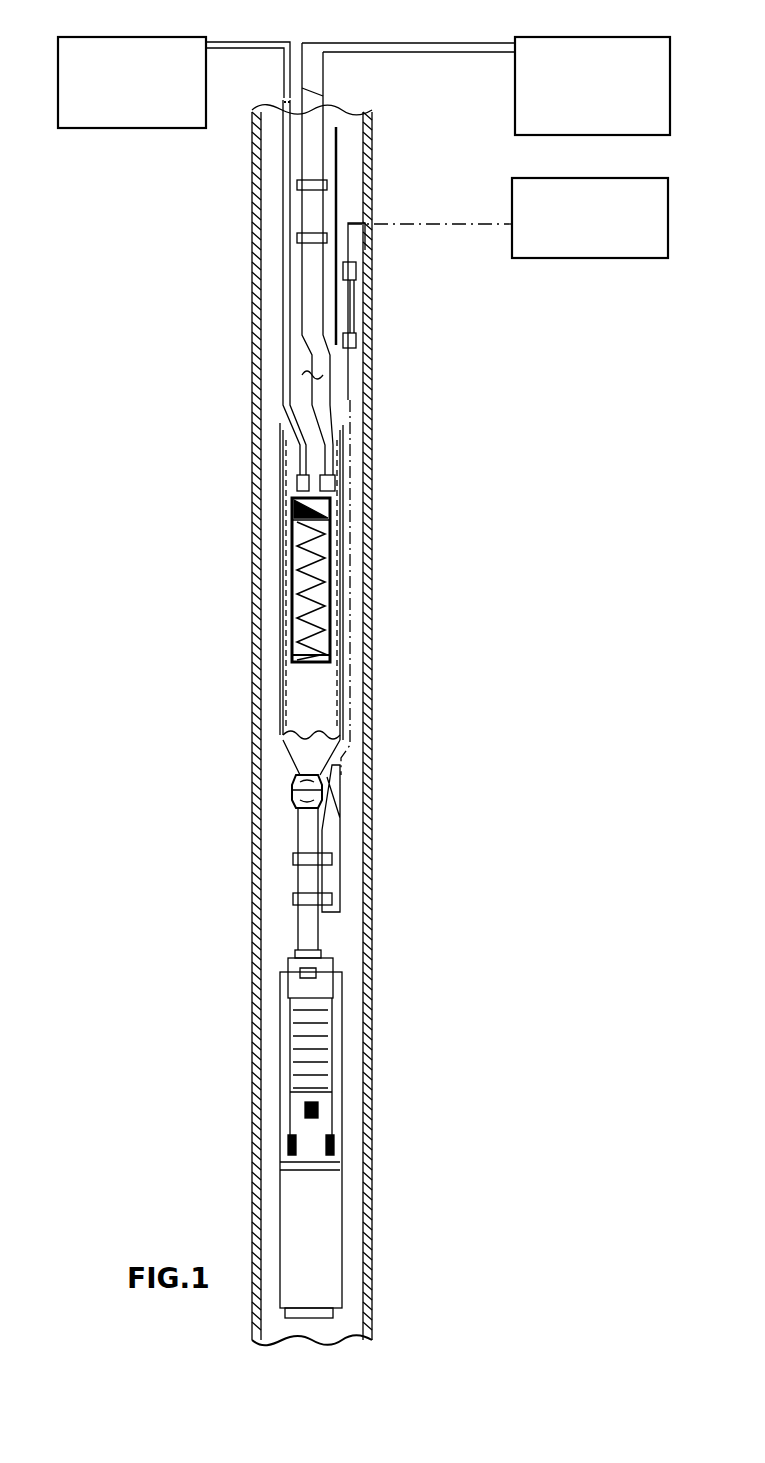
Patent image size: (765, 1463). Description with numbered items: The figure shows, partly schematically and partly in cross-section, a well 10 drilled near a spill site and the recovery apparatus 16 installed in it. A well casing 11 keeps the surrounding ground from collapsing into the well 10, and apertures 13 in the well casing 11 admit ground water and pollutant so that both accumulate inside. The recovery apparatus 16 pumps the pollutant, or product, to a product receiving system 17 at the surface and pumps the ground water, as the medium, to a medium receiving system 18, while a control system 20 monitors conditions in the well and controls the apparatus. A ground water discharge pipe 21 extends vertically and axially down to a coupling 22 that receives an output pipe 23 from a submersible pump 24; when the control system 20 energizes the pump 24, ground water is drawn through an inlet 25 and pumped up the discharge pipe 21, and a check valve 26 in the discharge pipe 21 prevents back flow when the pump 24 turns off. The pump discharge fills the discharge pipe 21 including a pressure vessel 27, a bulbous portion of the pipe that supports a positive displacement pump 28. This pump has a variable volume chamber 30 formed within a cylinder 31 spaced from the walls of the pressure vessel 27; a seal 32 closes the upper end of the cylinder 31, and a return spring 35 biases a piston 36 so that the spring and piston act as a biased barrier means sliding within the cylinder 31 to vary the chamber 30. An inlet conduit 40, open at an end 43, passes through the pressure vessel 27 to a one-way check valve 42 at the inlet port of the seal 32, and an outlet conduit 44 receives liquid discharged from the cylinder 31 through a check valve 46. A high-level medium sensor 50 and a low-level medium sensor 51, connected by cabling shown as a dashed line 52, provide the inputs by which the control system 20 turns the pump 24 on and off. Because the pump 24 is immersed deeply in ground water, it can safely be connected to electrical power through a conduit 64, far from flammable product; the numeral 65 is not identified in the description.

The well 10 is at (383, 384).
The well casing 11 is at (370, 725).
The apertures 13 is at (254, 320).
The recovery apparatus 16 is at (355, 528).
The product receiving system 17 is at (156, 37).
The medium receiving system 18 is at (610, 37).
The control system 20 is at (655, 178).
The ground water discharge pipe 21 is at (325, 155).
The coupling 22 is at (320, 792).
The output pipe 23 is at (298, 873).
The submersible pump 24 is at (342, 990).
The inlet 25 is at (318, 1110).
The check valve 26 is at (328, 208).
The pressure vessel 27 is at (343, 542).
The positive displacement pump 28 is at (343, 512).
The variable volume chamber 30 is at (292, 545).
The cylinder 31 is at (283, 598).
The seal 32 is at (296, 498).
The return spring 35 is at (320, 616).
The piston 36 is at (325, 655).
The inlet conduit 40 is at (333, 412).
The one-way check valve 42 is at (337, 485).
The open end 43 is at (323, 253).
The outlet conduit 44 is at (283, 322).
The check valve 46 is at (298, 478).
The high-level medium sensor 50 is at (350, 272).
The low-level medium sensor 51 is at (356, 341).
The cabling 52 is at (358, 300).
The conduit 64 is at (338, 818).
The control cable 65 is at (355, 358).